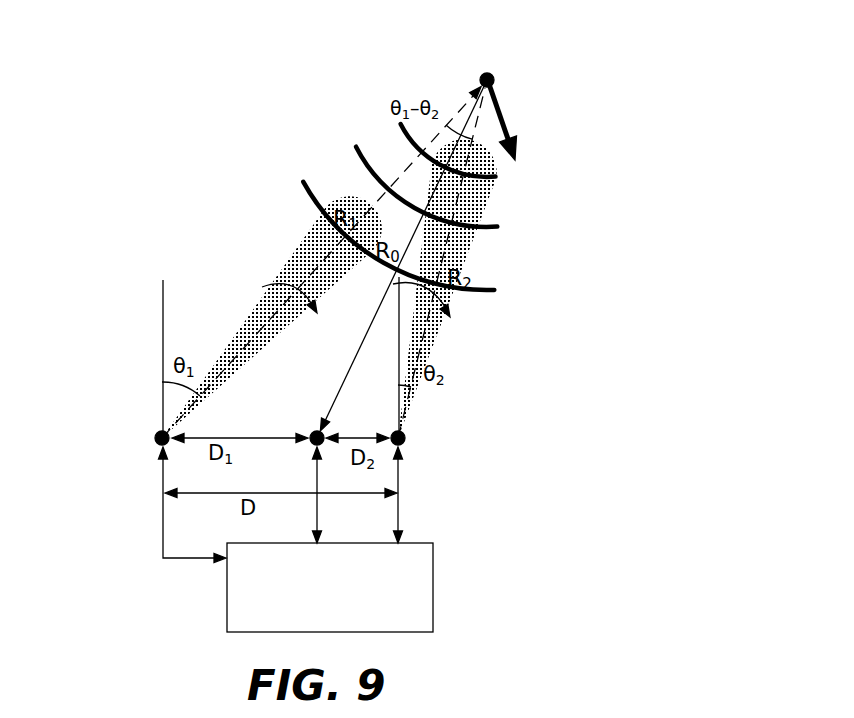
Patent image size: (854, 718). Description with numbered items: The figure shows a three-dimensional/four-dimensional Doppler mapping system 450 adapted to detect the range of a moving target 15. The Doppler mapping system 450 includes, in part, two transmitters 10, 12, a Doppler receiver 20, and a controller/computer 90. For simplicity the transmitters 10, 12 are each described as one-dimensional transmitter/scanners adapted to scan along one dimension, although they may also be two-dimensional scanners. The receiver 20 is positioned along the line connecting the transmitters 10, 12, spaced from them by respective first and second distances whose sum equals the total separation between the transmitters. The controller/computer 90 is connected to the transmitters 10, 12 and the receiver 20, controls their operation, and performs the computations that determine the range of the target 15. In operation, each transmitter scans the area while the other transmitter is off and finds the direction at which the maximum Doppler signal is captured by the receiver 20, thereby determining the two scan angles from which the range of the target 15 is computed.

The transmitter 10 is at (153, 437).
The transmitter 12 is at (405, 437).
The Doppler receiver 20 is at (311, 430).
The target 15 is at (488, 70).
The controller/computer 90 is at (433, 572).
The 3D/4D Doppler mapping system 450 is at (640, 141).